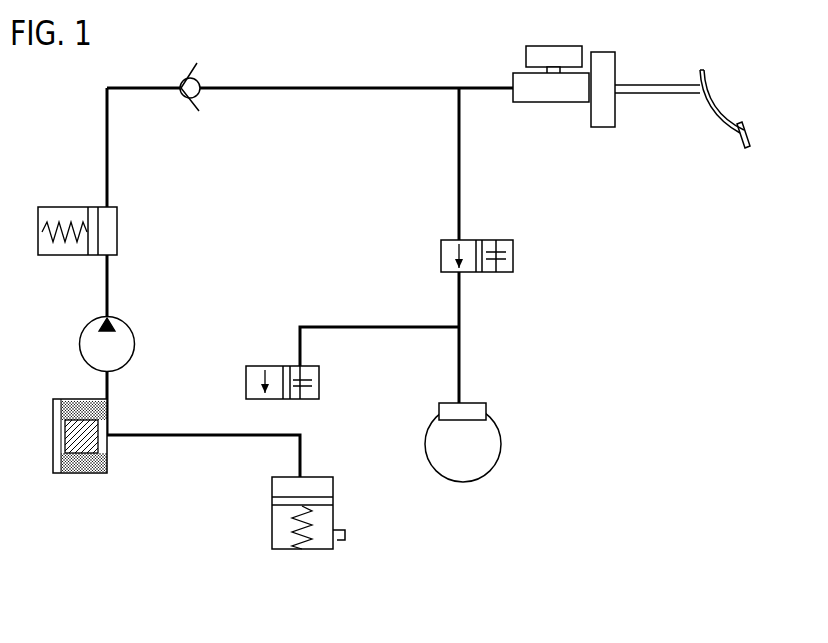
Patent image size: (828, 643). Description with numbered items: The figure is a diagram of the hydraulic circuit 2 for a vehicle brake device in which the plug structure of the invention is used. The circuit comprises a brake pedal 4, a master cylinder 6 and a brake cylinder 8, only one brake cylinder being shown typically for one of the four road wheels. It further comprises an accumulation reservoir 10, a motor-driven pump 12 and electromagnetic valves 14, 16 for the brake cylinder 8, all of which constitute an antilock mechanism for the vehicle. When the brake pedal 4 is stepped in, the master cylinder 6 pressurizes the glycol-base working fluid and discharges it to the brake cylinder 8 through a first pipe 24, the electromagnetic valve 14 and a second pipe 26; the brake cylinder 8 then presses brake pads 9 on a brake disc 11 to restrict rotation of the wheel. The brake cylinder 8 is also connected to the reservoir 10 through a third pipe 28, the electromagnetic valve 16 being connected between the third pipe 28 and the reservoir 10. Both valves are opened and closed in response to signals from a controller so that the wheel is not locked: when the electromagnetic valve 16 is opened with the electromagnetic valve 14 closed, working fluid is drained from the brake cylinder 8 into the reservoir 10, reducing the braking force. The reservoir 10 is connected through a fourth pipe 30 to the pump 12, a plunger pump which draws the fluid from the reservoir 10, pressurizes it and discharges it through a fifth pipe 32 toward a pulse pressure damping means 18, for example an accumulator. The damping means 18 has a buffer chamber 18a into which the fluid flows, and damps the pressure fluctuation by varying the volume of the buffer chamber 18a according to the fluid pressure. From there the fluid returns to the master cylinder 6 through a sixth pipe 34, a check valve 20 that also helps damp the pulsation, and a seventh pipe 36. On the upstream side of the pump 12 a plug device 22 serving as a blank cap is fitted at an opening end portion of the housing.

The hydraulic circuit 2 is at (536, 584).
The brake pedal 4 is at (748, 143).
The master cylinder 6 is at (551, 95).
The brake cylinder 8 is at (488, 437).
The brake pad 9 is at (463, 410).
The accumulation reservoir 10 is at (316, 484).
The brake disc 11 is at (487, 455).
The motor-driven pump 12 is at (137, 344).
The electromagnetic valve 14 is at (441, 243).
The electromagnetic valve 16 is at (319, 380).
The pulse pressure damping means 18 is at (115, 223).
The buffer chamber 18a is at (106, 243).
The check valve 20 is at (183, 97).
The plug device 22 is at (81, 477).
The first pipe 24 is at (460, 172).
The second pipe 26 is at (460, 305).
The third pipe 28 is at (375, 330).
The fourth pipe 30 is at (200, 438).
The fifth pipe 32 is at (108, 288).
The sixth pipe 34 is at (107, 165).
The seventh pipe 36 is at (322, 90).